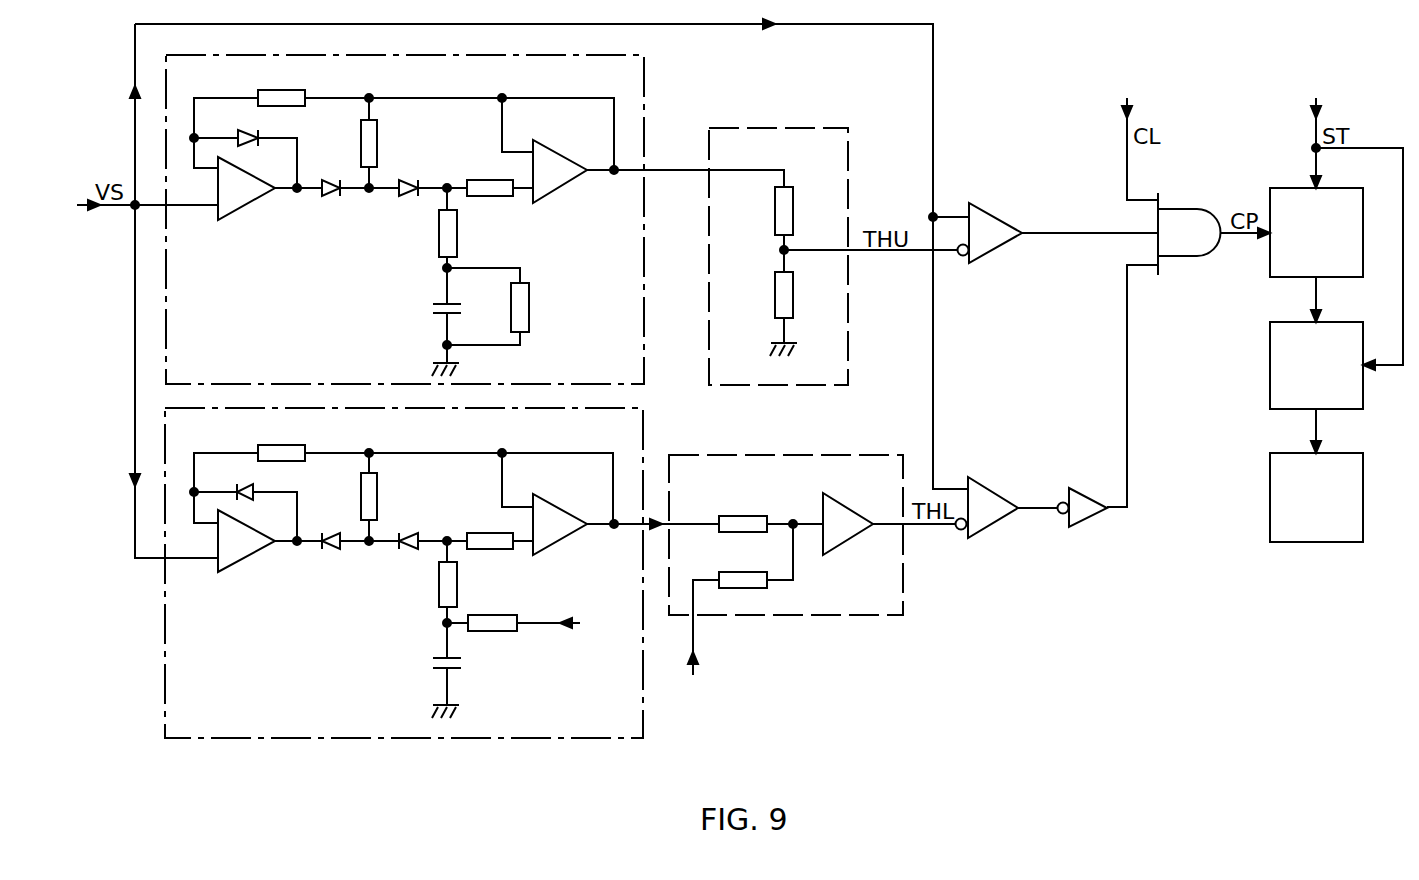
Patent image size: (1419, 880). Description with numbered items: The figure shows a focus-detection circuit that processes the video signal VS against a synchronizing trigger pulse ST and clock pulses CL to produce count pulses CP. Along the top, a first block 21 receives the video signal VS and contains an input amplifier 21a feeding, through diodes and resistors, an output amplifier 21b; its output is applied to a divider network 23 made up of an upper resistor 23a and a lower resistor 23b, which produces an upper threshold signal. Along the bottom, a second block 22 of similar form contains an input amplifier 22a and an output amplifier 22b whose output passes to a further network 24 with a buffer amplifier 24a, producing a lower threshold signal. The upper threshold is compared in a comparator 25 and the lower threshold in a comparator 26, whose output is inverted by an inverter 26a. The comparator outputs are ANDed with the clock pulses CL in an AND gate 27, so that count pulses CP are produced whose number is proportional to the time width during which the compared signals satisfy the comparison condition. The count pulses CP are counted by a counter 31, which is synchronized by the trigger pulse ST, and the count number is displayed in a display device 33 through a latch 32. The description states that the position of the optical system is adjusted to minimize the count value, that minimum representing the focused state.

The upper peak-hold (threshold) detector circuit 21 is at (648, 73).
The input operational amplifier of circuit 21 21a is at (243, 207).
The output buffer amplifier of circuit 21 21b is at (563, 188).
The lower peak-hold (threshold) detector circuit 22 is at (642, 727).
The input operational amplifier of circuit 22 22a is at (243, 560).
The output buffer amplifier of circuit 22 22b is at (567, 540).
The voltage divider for upper threshold THU 23 is at (765, 127).
The upper divider resistor 23a is at (775, 212).
The lower divider resistor 23b is at (773, 302).
The lower threshold THL generating circuit 24 is at (868, 617).
The buffer amplifier of circuit 24 24a is at (845, 502).
The upper comparator 25 is at (997, 212).
The lower comparator 26 is at (997, 523).
The inverter 26a is at (1093, 515).
The AND gate 27 is at (1180, 207).
The counter 31 is at (1268, 260).
The latch 32 is at (1268, 353).
The display device 33 is at (1268, 487).